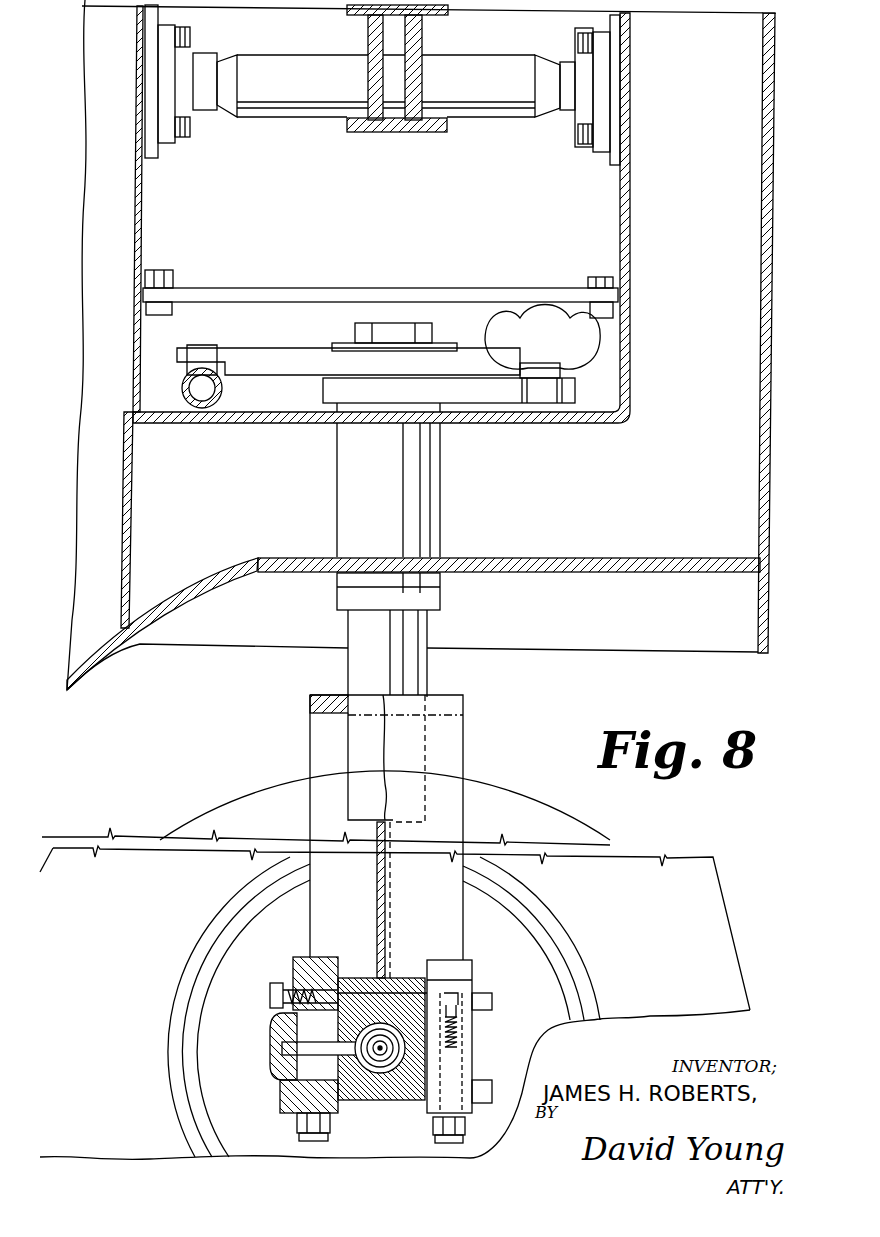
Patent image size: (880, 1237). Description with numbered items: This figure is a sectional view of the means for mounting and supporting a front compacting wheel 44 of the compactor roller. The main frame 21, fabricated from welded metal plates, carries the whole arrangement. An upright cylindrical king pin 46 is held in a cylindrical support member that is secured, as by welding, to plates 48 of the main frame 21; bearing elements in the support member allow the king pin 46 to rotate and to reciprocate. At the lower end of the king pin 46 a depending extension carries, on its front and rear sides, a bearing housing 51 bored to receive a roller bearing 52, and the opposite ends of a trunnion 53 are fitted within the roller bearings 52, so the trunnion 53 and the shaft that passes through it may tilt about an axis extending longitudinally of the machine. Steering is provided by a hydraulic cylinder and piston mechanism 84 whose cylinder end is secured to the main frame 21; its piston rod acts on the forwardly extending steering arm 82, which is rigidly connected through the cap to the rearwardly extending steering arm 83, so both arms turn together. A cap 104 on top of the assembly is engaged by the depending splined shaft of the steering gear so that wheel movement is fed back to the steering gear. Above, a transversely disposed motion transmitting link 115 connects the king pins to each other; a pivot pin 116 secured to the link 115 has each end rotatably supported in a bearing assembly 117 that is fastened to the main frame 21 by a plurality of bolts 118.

The main frame 21 is at (778, 73).
The compacting wheel 44 is at (710, 898).
The king pin 46 is at (415, 673).
The plates 48 is at (560, 426).
The bearing housing 51 is at (300, 957).
The roller bearing 52 is at (280, 1098).
The trunnion 53 is at (363, 1093).
The steering arm 82 is at (492, 395).
The steering arm 83 is at (280, 370).
The cylinder and piston mechanism 84 is at (596, 372).
The cap 104 is at (362, 332).
The motion transmitting link 115 is at (373, 33).
The pivot pin 116 is at (498, 108).
The bearing assembly 117 is at (167, 140).
The bolts 118 is at (185, 32).